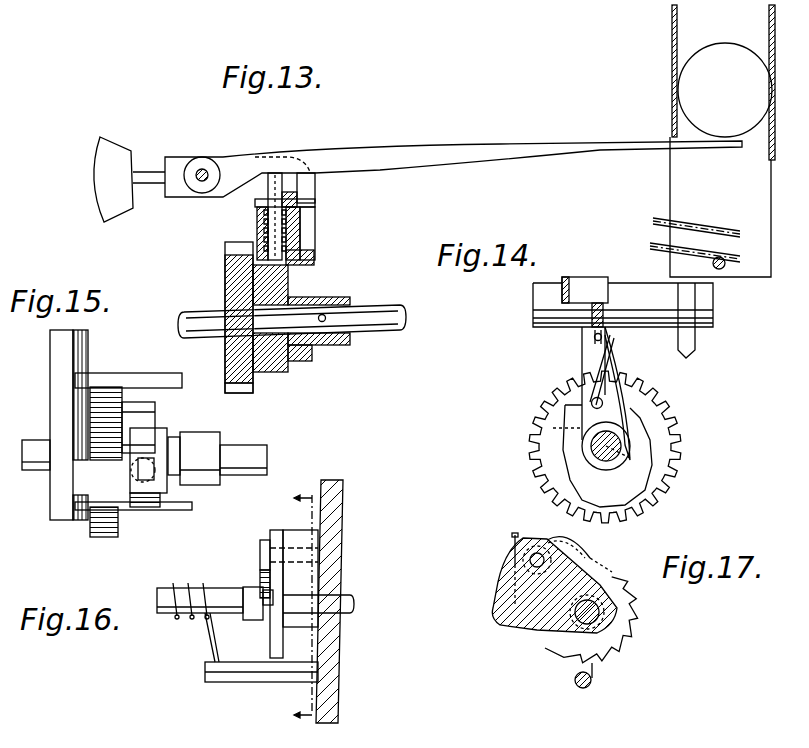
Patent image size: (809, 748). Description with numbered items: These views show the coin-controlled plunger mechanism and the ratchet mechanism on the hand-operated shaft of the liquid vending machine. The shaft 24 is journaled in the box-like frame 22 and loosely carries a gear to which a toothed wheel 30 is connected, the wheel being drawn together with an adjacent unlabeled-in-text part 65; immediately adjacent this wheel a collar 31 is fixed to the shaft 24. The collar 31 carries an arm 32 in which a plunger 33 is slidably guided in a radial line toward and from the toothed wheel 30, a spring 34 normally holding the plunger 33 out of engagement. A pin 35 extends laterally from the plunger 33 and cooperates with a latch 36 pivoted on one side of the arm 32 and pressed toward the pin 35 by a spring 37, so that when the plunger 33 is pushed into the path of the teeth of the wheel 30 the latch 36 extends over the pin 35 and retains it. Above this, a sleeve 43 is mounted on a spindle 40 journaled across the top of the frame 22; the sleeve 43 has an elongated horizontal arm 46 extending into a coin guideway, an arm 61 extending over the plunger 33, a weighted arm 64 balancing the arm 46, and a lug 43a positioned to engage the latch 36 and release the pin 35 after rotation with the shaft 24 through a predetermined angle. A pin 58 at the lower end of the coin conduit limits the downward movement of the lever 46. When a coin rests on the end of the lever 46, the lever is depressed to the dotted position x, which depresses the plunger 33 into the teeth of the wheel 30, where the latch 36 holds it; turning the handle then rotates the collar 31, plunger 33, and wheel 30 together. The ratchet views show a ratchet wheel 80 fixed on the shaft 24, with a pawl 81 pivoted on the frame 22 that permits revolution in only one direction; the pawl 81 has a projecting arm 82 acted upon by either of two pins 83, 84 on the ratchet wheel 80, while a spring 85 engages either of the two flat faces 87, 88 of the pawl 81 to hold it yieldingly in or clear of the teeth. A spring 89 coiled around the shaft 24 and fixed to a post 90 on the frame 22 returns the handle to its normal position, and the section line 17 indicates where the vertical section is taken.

In FIG. 16, the section line 17— 17 is at (302, 607).
In FIG. 16, the frame 22 is at (331, 655).
In FIG. 17, the frame 22 is at (520, 632).
In FIG. 13, the shaft 24 is at (388, 334).
In FIG. 14, the shaft 24 is at (634, 457).
In FIG. 15, the shaft 24 is at (30, 446).
In FIG. 13, the toothed wheel 30 is at (312, 358).
In FIG. 14, the toothed wheel 30 is at (641, 433).
In FIG. 15, the toothed wheel 30 is at (145, 400).
In FIG. 13, the collar 31 is at (346, 345).
In FIG. 14, the collar 31 is at (591, 445).
In FIG. 15, the collar 31 is at (201, 444).
In FIG. 13, the arm 32 is at (314, 252).
In FIG. 14, the arm 32 is at (586, 378).
In FIG. 15, the arm 32 is at (175, 439).
In FIG. 13, the plunger 33 is at (268, 232).
In FIG. 14, the plunger 33 is at (592, 312).
In FIG. 13, the spring 34 is at (264, 222).
In FIG. 13, the pin 35 is at (315, 204).
In FIG. 14, the pin 35 is at (595, 340).
In FIG. 13, the latch 36 is at (306, 233).
In FIG. 14, the latch 36 is at (626, 352).
In FIG. 14, the spring 37 is at (626, 377).
In FIG. 13, the spindle 40 is at (200, 181).
In FIG. 13, the sleeve 43 is at (204, 160).
In FIG. 14, the sleeve 43 is at (632, 296).
In FIG. 15, the sleeve 43 is at (69, 425).
In FIG. 13, the lug 43a is at (315, 182).
In FIG. 14, the lug 43a is at (695, 338).
In FIG. 15, the lug 43a is at (110, 378).
In FIG. 13, the arm 46 is at (453, 169).
In FIG. 14, the arm 46 is at (566, 279).
In FIG. 15, the arm 46 is at (172, 510).
In FIG. 13, the pin 58 is at (724, 268).
In FIG. 14, the arm 61 is at (600, 284).
In FIG. 15, the arm 61 is at (129, 460).
In FIG. 13, the weighted arm 64 is at (129, 179).
In FIG. 13, the collar 65 is at (253, 390).
In FIG. 14, the collar 65 is at (545, 428).
In FIG. 15, the collar 65 is at (106, 537).
In FIG. 16, the ratchet wheel 80 is at (270, 635).
In FIG. 17, the ratchet wheel 80 is at (622, 580).
In FIG. 17, the pawl 81 is at (572, 548).
In FIG. 16, the arm 82 is at (262, 575).
In FIG. 17, the arm 82 is at (565, 660).
In FIG. 17, the pin 83 is at (598, 601).
In FIG. 17, the pin 84 is at (594, 566).
In FIG. 16, the spring 85 is at (266, 562).
In FIG. 17, the spring 85 is at (512, 537).
In FIG. 17, the flat face 87 is at (512, 560).
In FIG. 17, the flat face 88 is at (528, 538).
In FIG. 16, the spring 89 is at (180, 590).
In FIG. 16, the post 90 is at (254, 681).
In FIG. 13, the depressed lever position x is at (716, 228).